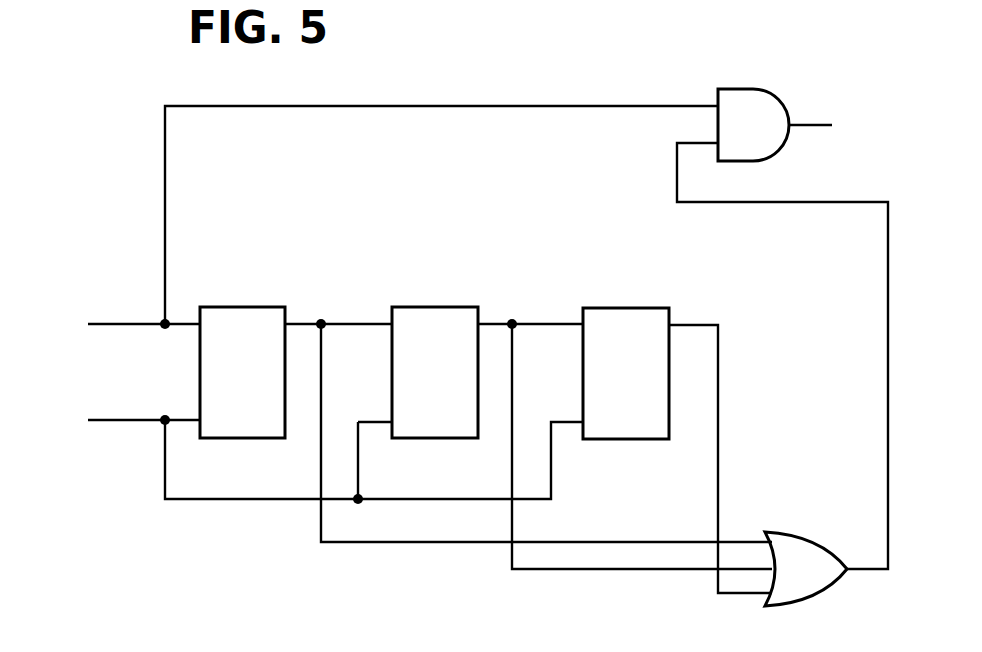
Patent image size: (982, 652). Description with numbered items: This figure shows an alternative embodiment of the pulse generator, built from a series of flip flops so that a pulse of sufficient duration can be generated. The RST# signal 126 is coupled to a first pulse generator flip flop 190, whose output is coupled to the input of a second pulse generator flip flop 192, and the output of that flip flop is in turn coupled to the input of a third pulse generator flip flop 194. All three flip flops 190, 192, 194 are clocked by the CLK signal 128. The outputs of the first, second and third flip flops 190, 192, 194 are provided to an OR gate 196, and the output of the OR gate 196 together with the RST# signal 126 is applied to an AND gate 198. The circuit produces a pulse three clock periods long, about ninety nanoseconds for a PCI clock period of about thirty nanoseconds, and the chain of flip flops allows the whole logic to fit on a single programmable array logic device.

The RST# signal 126 is at (127, 323).
The CLK signal 128 is at (127, 421).
The first pulse generator flip flop 190 is at (240, 307).
The second pulse generator flip flop 192 is at (418, 307).
The third pulse generator flip flop 194 is at (610, 308).
The OR gate 196 is at (793, 532).
The AND gate 198 is at (767, 89).